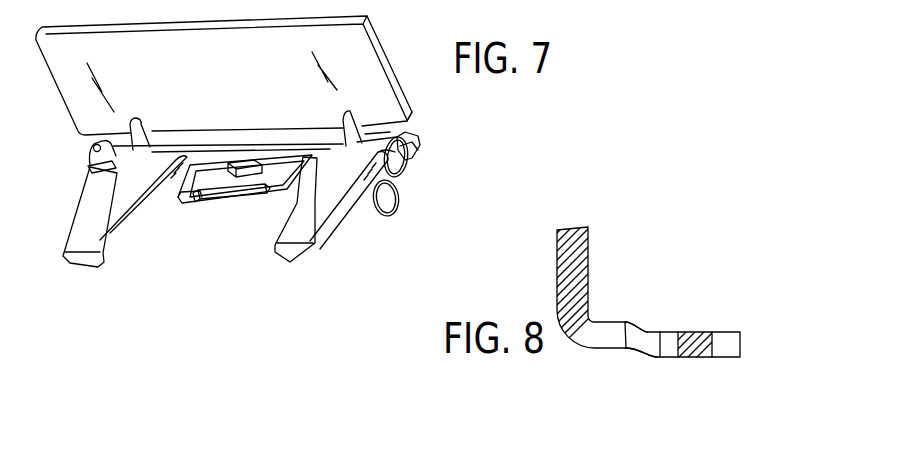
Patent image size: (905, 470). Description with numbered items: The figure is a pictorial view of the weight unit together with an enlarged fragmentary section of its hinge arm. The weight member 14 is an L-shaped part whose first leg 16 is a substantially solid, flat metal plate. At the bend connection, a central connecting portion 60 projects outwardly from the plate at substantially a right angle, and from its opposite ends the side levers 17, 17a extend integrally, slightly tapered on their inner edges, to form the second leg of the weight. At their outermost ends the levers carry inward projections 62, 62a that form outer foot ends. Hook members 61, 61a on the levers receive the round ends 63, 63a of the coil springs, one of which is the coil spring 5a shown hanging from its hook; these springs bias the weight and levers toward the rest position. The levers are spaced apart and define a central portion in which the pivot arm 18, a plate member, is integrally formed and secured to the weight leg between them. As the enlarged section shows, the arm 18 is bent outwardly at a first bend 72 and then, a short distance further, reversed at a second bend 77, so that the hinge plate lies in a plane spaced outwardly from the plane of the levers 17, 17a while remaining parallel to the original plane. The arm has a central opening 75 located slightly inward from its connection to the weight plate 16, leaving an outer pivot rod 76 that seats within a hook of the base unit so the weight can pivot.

In FIG. 7, the weight member 14 is at (386, 56).
In FIG. 8, the weight member 14 is at (574, 368).
In FIG. 7, the first leg 16 is at (238, 86).
In FIG. 7, the coil spring 5a is at (396, 213).
In FIG. 7, the side lever 17 is at (110, 238).
In FIG. 7, the side lever 17a is at (313, 240).
In FIG. 7, the pivot arm 18 is at (268, 207).
In FIG. 7, the central connecting portion 60 is at (222, 151).
In FIG. 8, the central connecting portion 60 is at (559, 308).
In FIG. 7, the hook member 61 is at (95, 148).
In FIG. 7, the hook member 61a is at (407, 136).
In FIG. 7, the inward projection 62 is at (85, 268).
In FIG. 7, the inward projection 62a is at (298, 259).
In FIG. 7, the round end 63 is at (93, 160).
In FIG. 7, the round end 63a is at (408, 158).
In FIG. 8, the bend 72 is at (633, 320).
In FIG. 7, the central opening 75 is at (253, 158).
In FIG. 8, the central opening 75 is at (647, 331).
In FIG. 7, the outer pivot rod 76 is at (235, 199).
In FIG. 8, the outer pivot rod 76 is at (674, 352).
In FIG. 8, the bend 77 is at (658, 354).